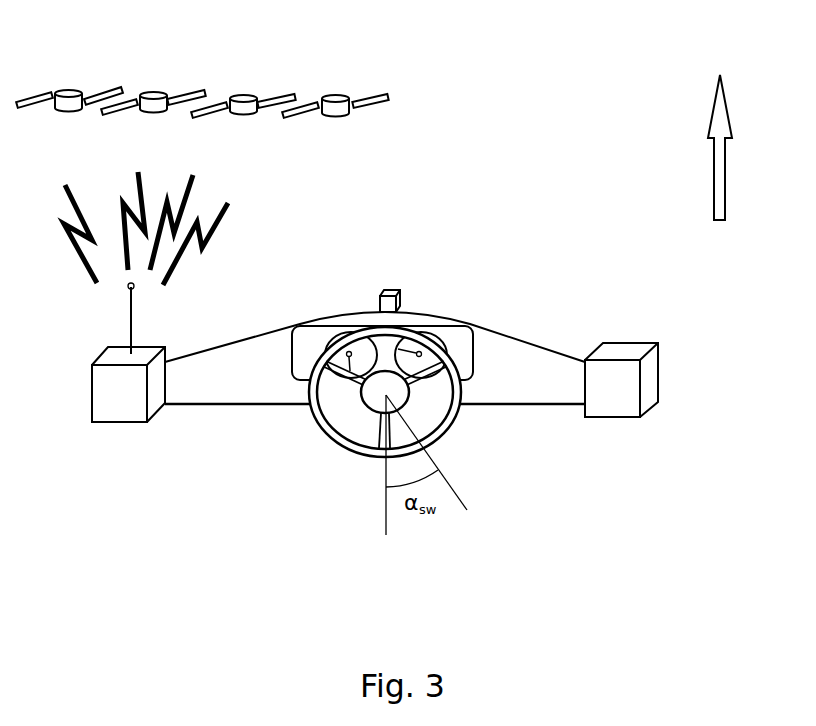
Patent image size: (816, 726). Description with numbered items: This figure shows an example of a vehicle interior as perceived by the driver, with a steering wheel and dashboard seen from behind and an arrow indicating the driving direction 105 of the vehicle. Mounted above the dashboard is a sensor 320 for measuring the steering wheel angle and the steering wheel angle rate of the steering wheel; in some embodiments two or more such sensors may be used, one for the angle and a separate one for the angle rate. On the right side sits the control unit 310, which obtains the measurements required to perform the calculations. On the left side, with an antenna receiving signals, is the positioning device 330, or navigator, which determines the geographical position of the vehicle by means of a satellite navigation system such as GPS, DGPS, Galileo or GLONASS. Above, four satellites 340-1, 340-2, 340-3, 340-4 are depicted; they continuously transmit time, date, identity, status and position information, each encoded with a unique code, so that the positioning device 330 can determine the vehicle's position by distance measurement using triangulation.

The satellite 340-1 is at (33, 98).
The satellite 340-2 is at (125, 100).
The satellite 340-3 is at (217, 100).
The satellite 340-4 is at (310, 102).
The positioning device 330 is at (140, 404).
The control unit 310 is at (633, 401).
The sensor 320 is at (400, 292).
The driving direction 105 is at (742, 147).